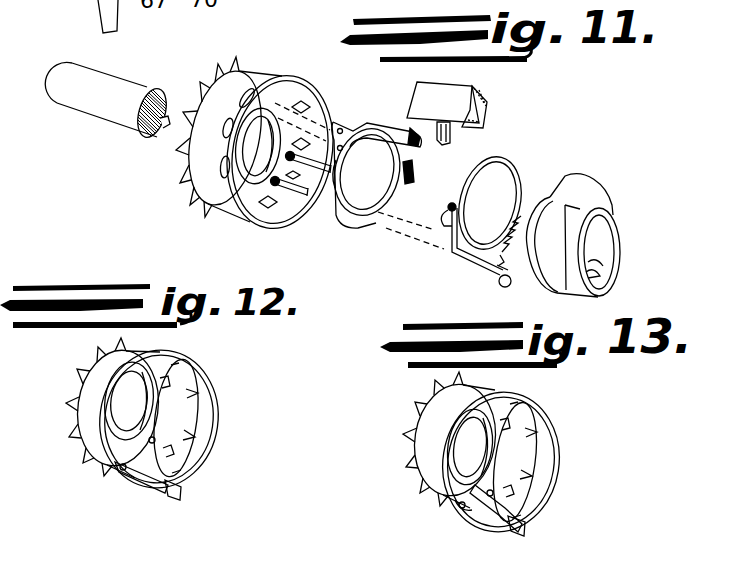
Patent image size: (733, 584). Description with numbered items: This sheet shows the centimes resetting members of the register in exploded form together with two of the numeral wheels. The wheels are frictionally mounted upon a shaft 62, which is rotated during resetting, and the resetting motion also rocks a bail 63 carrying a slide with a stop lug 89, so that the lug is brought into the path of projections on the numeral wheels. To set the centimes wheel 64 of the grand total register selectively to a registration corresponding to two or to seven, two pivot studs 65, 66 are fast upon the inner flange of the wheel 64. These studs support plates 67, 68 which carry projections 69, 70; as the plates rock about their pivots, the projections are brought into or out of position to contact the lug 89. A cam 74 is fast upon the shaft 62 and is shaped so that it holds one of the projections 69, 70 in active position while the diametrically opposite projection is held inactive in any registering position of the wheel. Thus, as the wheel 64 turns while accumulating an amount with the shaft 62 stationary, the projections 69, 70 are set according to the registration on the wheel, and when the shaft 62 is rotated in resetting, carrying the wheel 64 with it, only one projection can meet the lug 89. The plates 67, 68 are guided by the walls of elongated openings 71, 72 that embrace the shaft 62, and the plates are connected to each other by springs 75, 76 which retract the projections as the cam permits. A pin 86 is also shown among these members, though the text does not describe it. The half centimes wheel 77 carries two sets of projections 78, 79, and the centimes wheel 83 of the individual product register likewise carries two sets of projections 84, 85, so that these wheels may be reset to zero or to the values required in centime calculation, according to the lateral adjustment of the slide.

In FIG. 11, the shaft 62 is at (80, 103).
In FIG. 11, the bail 63 is at (474, 92).
In FIG. 11, the centimes wheel 64 is at (270, 76).
In FIG. 11, the pivot stud 65 is at (273, 112).
In FIG. 11, the pivot stud 66 is at (297, 195).
In FIG. 11, the plate 67 is at (345, 127).
In FIG. 11, the plate 68 is at (518, 230).
In FIG. 11, the projection 69 is at (410, 125).
In FIG. 11, the projection 70 is at (499, 277).
In FIG. 11, the elongated opening 71 is at (364, 190).
In FIG. 11, the elongated opening 72 is at (497, 188).
In FIG. 11, the cam 74 is at (587, 181).
In FIG. 11, the spring 75 is at (410, 183).
In FIG. 11, the spring 76 is at (453, 195).
In FIG. 12, the half centimes wheel 77 is at (217, 413).
In FIG. 12, the projection 78 is at (183, 492).
In FIG. 12, the projection 79 is at (168, 368).
In FIG. 13, the centimes wheel 83 is at (558, 457).
In FIG. 13, the projection 84 is at (527, 530).
In FIG. 13, the projection 85 is at (447, 507).
In FIG. 11, the pin 86 is at (311, 177).
In FIG. 11, the stop lug 89 is at (451, 137).